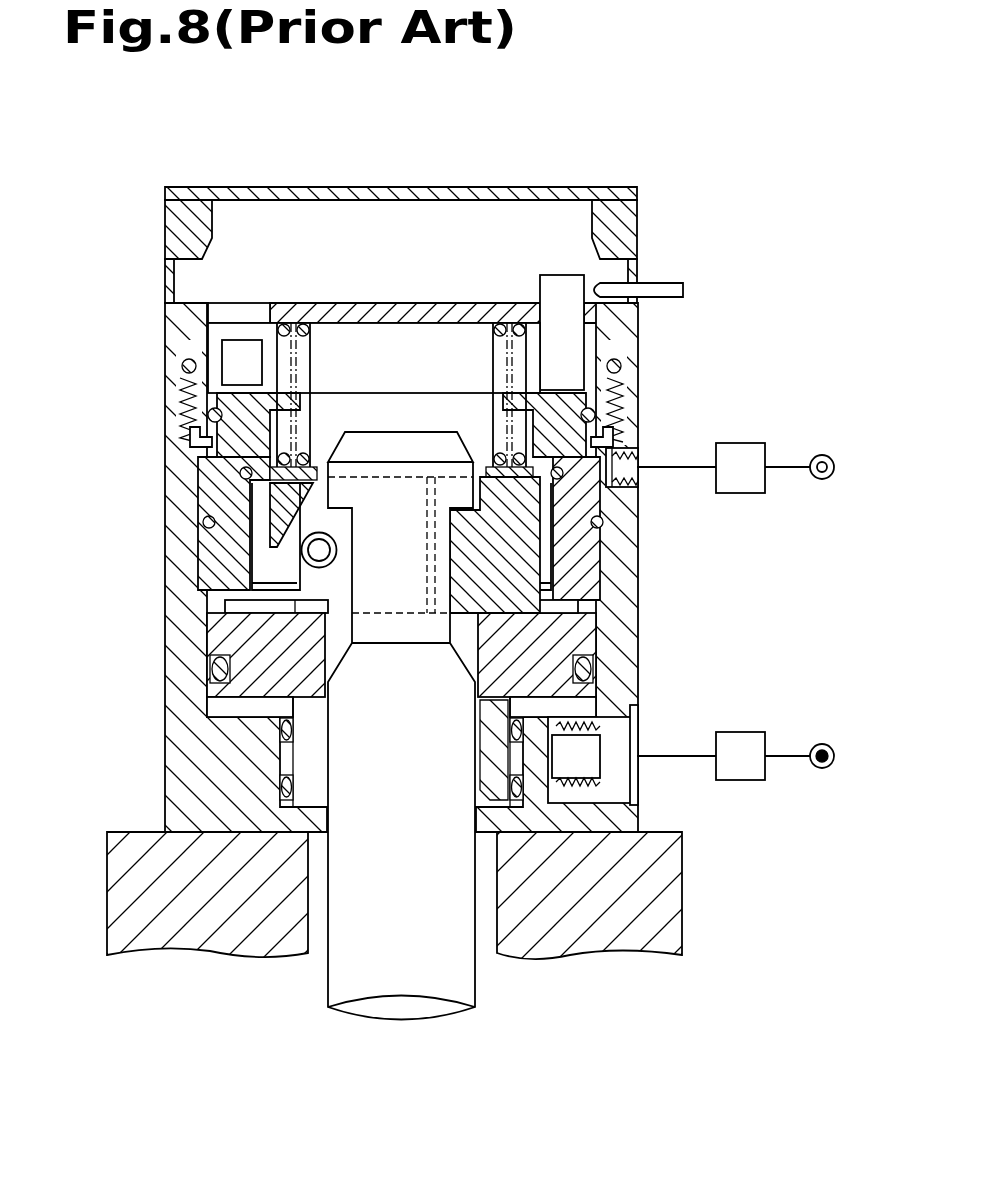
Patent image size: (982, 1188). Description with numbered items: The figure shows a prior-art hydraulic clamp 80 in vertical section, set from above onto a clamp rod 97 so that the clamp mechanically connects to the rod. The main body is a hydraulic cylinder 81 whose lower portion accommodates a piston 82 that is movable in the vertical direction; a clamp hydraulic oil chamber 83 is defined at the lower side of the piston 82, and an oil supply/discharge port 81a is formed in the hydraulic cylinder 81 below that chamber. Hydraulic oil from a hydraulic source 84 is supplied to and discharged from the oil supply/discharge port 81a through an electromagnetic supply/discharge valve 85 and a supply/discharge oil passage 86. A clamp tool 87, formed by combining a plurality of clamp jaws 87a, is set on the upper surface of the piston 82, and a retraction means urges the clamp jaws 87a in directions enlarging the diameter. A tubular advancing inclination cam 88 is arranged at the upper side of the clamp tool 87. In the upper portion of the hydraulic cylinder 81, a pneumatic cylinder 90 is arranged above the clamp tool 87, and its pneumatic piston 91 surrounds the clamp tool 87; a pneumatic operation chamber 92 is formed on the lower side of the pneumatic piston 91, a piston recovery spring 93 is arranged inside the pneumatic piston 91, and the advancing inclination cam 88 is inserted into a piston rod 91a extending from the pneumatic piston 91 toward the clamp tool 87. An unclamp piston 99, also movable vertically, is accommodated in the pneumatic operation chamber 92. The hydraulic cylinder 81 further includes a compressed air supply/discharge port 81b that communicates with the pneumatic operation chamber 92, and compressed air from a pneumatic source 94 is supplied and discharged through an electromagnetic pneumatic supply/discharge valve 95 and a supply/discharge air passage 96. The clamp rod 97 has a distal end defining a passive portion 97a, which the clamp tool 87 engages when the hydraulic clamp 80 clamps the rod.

The hydraulic clamp 80 is at (637, 169).
The hydraulic cylinder 81 is at (165, 700).
The oil supply/discharge port 81a is at (625, 745).
The compressed air supply/discharge port 81b is at (630, 480).
The piston 82 is at (215, 625).
The clamp hydraulic oil chamber 83 is at (215, 690).
The hydraulic source 84 is at (822, 770).
The electromagnetic supply/discharge valve 85 is at (740, 782).
The supply/discharge oil passage 86 is at (678, 760).
The clamp tool 87 is at (262, 532).
The clamp jaws 87a is at (500, 528).
The advancing inclination cam 88 is at (242, 478).
The pneumatic cylinder 90 is at (165, 320).
The pneumatic piston 91 is at (195, 432).
The piston rod 91a is at (258, 560).
The pneumatic operation chamber 92 is at (630, 440).
The piston recovery spring 93 is at (313, 352).
The pneumatic source 94 is at (822, 455).
The electromagnetic pneumatic supply/discharge valve 95 is at (745, 494).
The supply/discharge air passage 96 is at (700, 465).
The clamp rod 97 is at (330, 982).
The passive portion 97a is at (430, 438).
The unclamp piston 99 is at (585, 565).